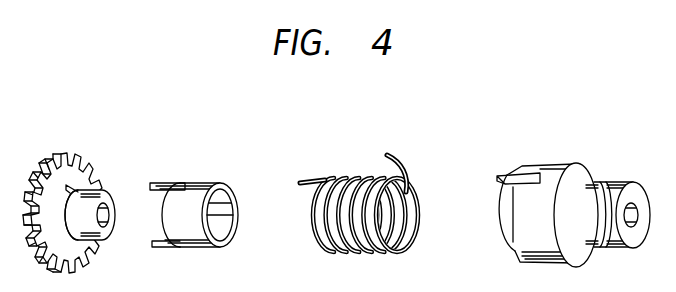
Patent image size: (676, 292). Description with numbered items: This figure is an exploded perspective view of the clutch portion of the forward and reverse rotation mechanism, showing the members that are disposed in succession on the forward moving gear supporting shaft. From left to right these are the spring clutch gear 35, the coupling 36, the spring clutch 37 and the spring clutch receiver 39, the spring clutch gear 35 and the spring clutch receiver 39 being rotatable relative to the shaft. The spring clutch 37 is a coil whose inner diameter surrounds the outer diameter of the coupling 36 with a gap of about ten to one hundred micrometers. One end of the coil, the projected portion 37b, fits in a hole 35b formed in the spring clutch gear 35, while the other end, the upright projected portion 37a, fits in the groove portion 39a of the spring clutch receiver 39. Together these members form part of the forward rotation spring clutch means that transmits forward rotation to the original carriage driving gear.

The spring clutch gear 35 is at (96, 172).
The hole 35b is at (72, 183).
The coupling 36 is at (190, 183).
The spring clutch 37 is at (354, 178).
The upright projected portion 37a is at (392, 160).
The projected portion 37b is at (311, 178).
The spring clutch receiver 39 is at (549, 167).
The groove portion 39a is at (503, 175).